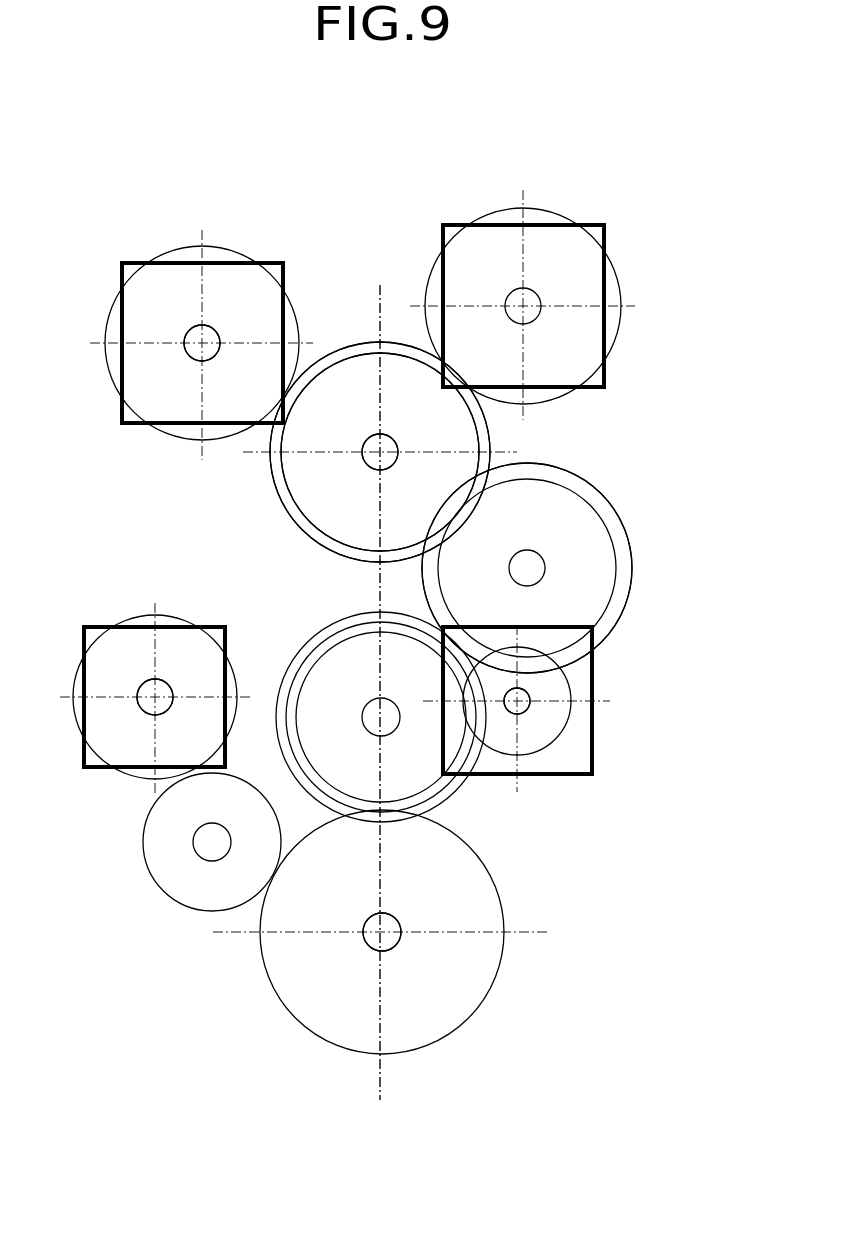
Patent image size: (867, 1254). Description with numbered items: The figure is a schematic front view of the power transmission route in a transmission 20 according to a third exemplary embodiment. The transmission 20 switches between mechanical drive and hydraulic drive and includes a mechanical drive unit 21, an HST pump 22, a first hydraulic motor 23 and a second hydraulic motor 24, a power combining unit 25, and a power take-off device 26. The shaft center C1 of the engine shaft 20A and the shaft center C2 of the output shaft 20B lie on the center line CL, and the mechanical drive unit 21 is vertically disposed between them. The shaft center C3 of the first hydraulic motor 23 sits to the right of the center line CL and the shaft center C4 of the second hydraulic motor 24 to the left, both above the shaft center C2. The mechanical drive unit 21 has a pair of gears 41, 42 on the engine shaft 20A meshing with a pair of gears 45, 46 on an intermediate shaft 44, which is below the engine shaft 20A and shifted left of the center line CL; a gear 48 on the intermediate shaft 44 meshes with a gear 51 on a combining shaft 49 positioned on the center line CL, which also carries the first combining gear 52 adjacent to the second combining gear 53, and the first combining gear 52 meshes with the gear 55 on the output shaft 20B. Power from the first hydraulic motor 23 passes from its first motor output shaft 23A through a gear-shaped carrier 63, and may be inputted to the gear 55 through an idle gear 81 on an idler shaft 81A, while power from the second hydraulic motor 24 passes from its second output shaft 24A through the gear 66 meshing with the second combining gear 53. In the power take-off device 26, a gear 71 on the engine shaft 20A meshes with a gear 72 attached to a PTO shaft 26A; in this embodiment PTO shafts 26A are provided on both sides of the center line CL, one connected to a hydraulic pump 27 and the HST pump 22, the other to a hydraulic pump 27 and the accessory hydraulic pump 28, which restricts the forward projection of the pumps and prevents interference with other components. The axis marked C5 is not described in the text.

The transmission 20 is at (330, 152).
The engine shaft 20A is at (390, 462).
The output shaft 20B is at (392, 950).
The mechanical drive unit 21 is at (622, 473).
The HST pump 22 is at (190, 310).
The first hydraulic motor 23 is at (112, 640).
The first motor output shaft 23A is at (163, 712).
The second hydraulic motor 24 is at (580, 755).
The second output shaft 24A is at (530, 710).
The power combining unit 25 is at (302, 605).
The power take-off device 26 is at (194, 204).
The PTO shaft 26A is at (213, 356).
The hydraulic pump 27 is at (190, 280).
The accessory hydraulic pump 28 is at (530, 245).
The gear 41 is at (428, 452).
The gear 42 is at (490, 430).
The intermediate shaft 44 is at (546, 568).
The gear 45 is at (571, 568).
The gear 46 is at (610, 535).
The gear 48 is at (630, 595).
The combining shaft 49 is at (393, 731).
The gear 51 is at (330, 620).
The first combining gear 52 is at (392, 635).
The second combining gear 53 is at (358, 627).
The gear 55 is at (492, 872).
The carrier 63 is at (74, 725).
The gear 66 is at (545, 750).
The gear 71 is at (358, 343).
The gear 72 is at (233, 248).
The idle gear 81 is at (143, 852).
The idler shaft 81A is at (208, 861).
The shaft center C1 is at (384, 448).
The shaft center C2 is at (398, 925).
The shaft center C3 is at (158, 693).
The shaft center C4 is at (522, 697).
The fifth axis C5 is at (208, 336).
The center line CL is at (381, 679).